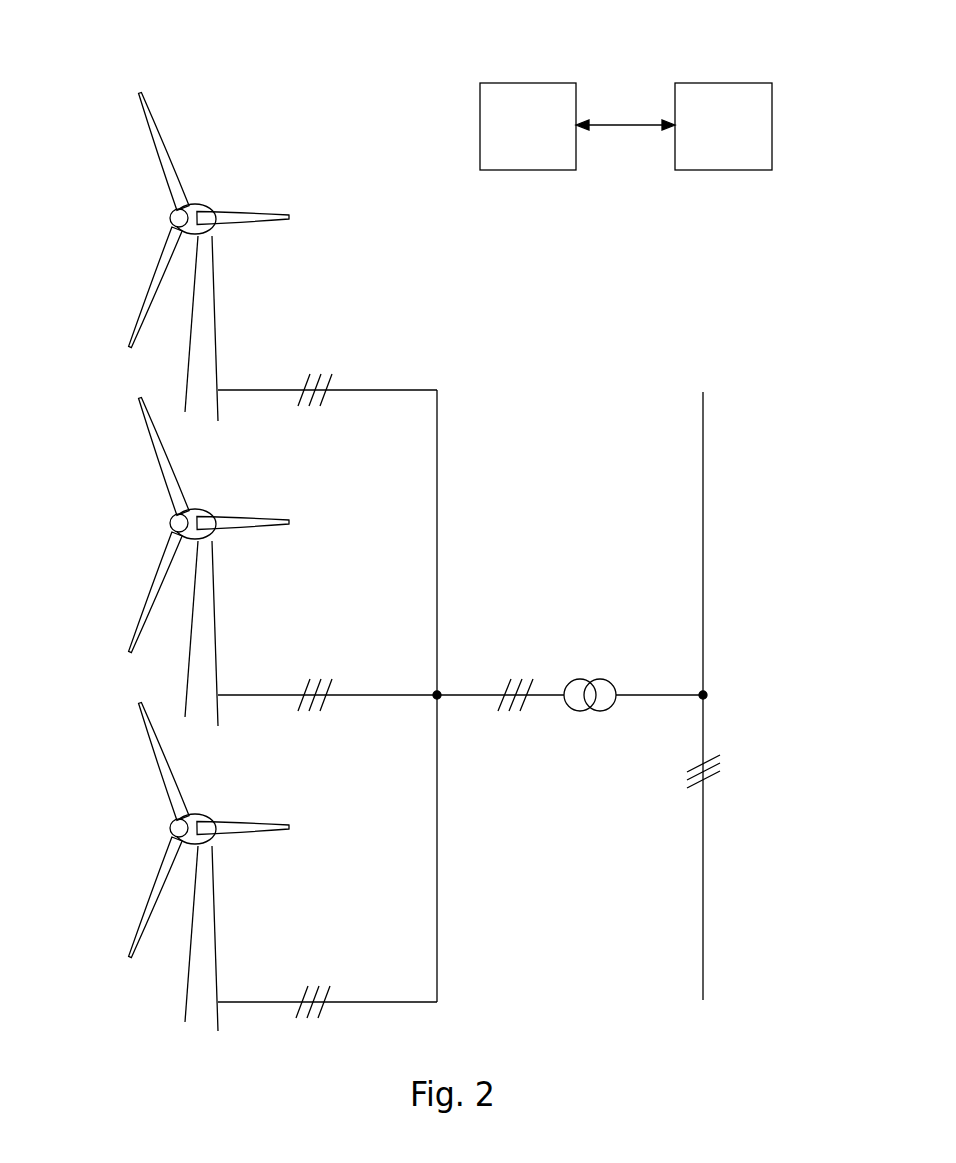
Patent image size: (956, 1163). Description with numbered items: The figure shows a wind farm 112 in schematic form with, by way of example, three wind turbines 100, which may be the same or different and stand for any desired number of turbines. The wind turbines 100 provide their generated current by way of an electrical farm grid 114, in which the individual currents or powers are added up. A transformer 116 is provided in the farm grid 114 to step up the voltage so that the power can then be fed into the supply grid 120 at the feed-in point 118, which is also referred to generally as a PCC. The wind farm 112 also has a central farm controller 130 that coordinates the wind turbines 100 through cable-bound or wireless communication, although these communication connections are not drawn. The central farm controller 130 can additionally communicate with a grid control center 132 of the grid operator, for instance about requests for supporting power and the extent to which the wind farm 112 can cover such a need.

The wind turbine 100 is at (205, 310).
The wind farm 112 is at (497, 332).
The electrical farm grid 114 is at (459, 695).
The transformer 116 is at (591, 670).
The feed-in point 118 is at (711, 682).
The supply grid 120 is at (703, 422).
The central farm controller 130 is at (538, 83).
The grid control center 132 is at (722, 83).